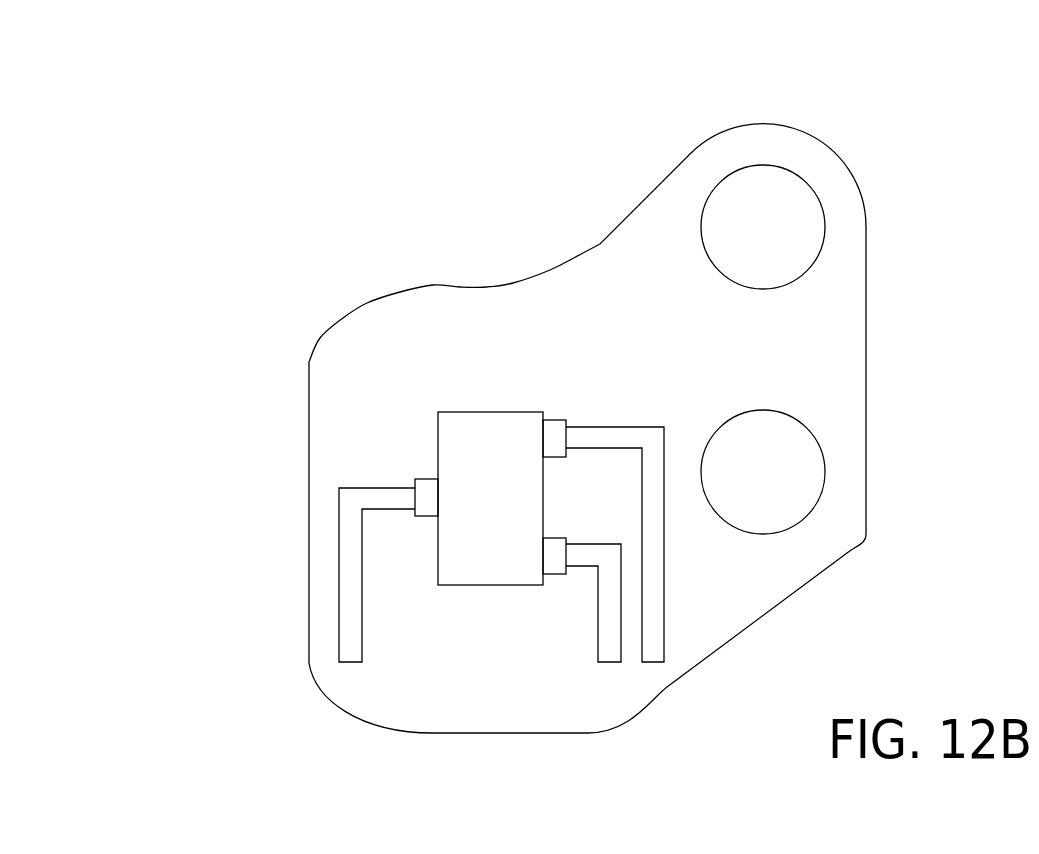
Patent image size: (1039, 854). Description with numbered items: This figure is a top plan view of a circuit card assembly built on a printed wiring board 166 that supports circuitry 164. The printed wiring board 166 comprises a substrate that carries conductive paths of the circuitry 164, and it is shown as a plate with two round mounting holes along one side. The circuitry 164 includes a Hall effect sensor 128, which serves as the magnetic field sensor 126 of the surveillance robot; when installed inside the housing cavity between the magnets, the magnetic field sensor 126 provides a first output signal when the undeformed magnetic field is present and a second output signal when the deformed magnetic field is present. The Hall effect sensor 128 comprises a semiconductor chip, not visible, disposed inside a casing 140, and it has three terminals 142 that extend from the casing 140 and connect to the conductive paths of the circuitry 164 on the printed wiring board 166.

The magnetic field sensor 126 is at (534, 379).
The printed wiring board 166 is at (363, 353).
The Hall effect sensor 128 is at (357, 400).
The casing 140 is at (472, 452).
The terminals 142 is at (553, 442).
The circuitry 164 is at (353, 547).